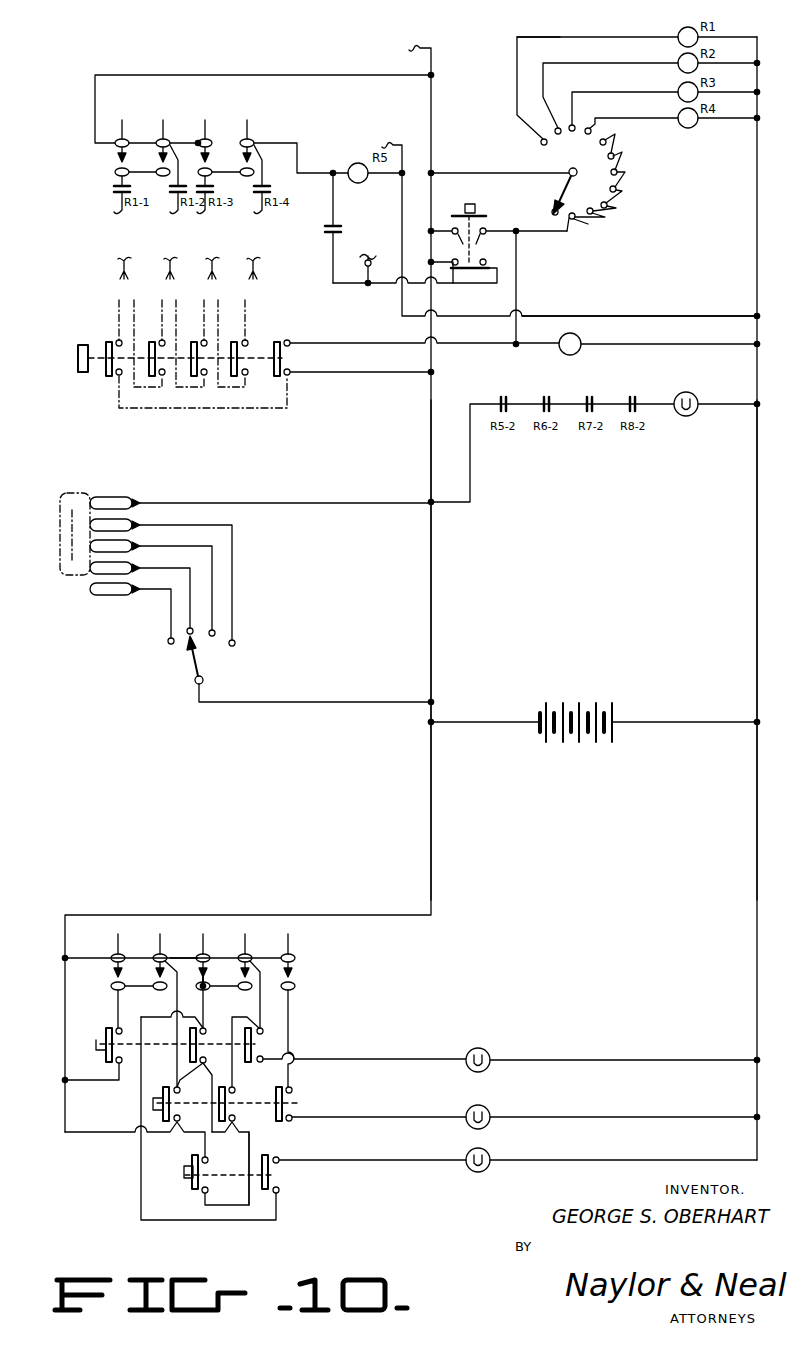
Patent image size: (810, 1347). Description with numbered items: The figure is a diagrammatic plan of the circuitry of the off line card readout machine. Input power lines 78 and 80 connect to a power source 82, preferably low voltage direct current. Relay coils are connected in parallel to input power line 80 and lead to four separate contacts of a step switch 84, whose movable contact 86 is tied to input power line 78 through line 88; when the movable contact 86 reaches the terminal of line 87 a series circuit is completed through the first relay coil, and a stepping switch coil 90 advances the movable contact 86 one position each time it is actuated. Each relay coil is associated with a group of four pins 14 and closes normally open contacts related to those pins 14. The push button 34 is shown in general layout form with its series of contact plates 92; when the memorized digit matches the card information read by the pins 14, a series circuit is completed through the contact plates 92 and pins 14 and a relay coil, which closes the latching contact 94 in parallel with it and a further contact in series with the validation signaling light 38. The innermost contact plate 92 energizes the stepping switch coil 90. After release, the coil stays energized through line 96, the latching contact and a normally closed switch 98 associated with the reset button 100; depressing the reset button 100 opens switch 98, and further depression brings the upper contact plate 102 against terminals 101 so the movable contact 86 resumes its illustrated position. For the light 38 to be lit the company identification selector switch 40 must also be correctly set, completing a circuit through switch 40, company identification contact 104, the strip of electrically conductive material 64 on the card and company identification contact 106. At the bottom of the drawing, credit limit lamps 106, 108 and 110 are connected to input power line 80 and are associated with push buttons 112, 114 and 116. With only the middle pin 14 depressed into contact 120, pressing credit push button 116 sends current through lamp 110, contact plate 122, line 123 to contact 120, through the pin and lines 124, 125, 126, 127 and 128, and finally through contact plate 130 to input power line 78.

The pins 14 is at (122, 139).
The push button 34 is at (78, 358).
The validation signaling light 38 is at (692, 400).
The company identification selector switch 40 is at (203, 662).
The strip of electrically conductive material 64 is at (60, 496).
The input power line 78 is at (433, 633).
The input power line 80 is at (770, 622).
The power source 82 is at (617, 710).
The step switch 84 is at (640, 186).
The movable contact 86 is at (568, 185).
The line 87 is at (570, 37).
The line 88 is at (445, 173).
The stepping switch coil 90 is at (580, 353).
The contact plates 92 is at (240, 355).
The latching contact 94 is at (338, 225).
The line 96 is at (627, 318).
The normally closed switch 98 is at (462, 284).
The reset button 100 is at (476, 210).
The terminals 101 is at (499, 246).
The upper contact plate 102 is at (489, 228).
The company identification contact 104 is at (96, 568).
The company identification contact / credit limit lamp 106 is at (114, 505).
The credit limit lamp 108 is at (488, 1112).
The credit limit lamp 110 is at (488, 1156).
The push button 112 is at (101, 1042).
The push button 114 is at (153, 1104).
The credit push button 116 is at (190, 1188).
The contact 120 is at (210, 994).
The contact plate 122 is at (282, 1176).
The line 123 is at (141, 1200).
The line 124 is at (170, 959).
The line 125 is at (186, 1041).
The line 126 is at (177, 1082).
The line 127 is at (212, 1138).
The line 128 is at (249, 1134).
The contact plate 130 is at (190, 1160).